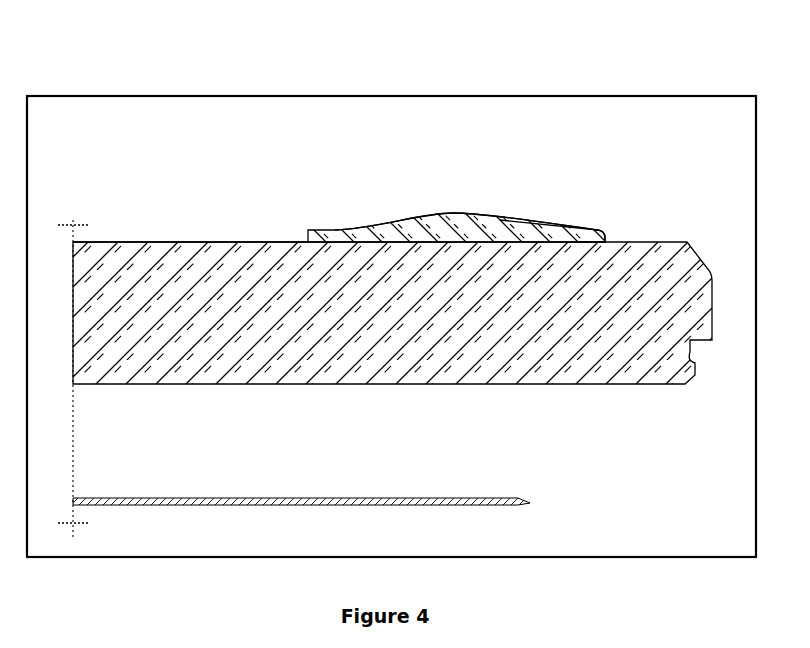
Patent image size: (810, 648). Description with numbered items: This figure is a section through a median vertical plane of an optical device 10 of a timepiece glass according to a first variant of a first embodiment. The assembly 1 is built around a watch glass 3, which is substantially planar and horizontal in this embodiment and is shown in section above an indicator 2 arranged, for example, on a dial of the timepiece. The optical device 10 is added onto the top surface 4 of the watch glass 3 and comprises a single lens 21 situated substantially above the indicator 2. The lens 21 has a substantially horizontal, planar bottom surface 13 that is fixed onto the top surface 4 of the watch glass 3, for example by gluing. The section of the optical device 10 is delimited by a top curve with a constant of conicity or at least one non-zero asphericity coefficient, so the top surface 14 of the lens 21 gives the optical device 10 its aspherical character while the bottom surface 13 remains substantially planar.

The coated article 1 is at (543, 95).
The indicator 2 is at (518, 503).
The watch glass 3 is at (597, 384).
The top surface 4 is at (190, 240).
The optical device 10 is at (372, 210).
The bottom surface 13 is at (585, 240).
The top surface 14 is at (535, 227).
The lens 21 is at (455, 226).